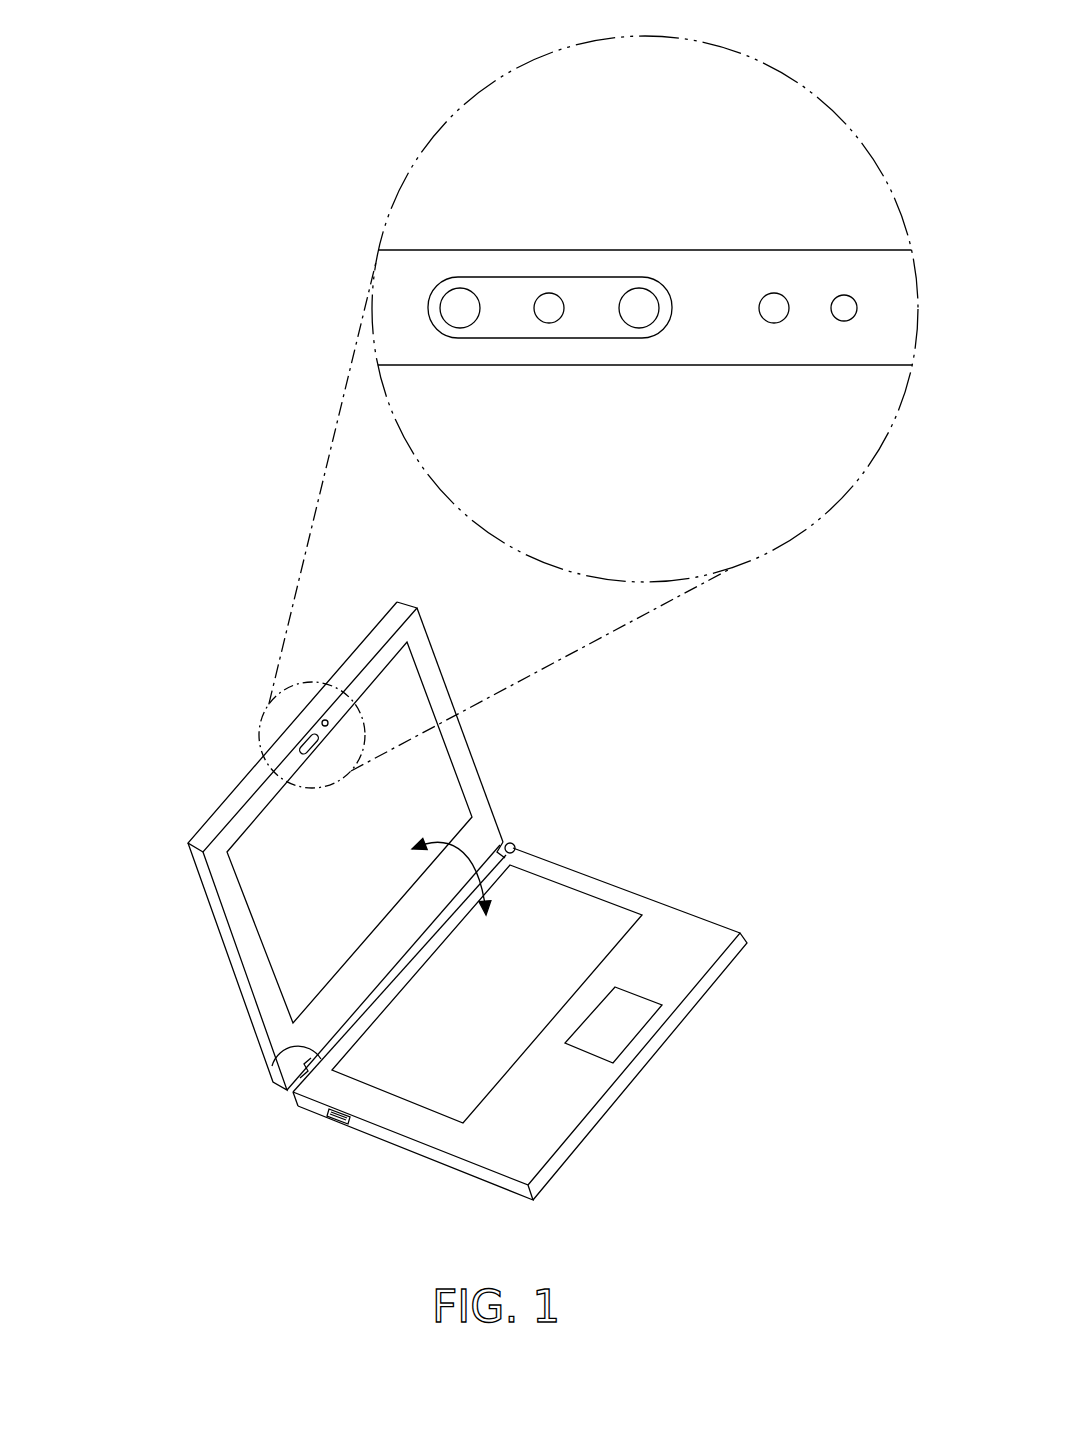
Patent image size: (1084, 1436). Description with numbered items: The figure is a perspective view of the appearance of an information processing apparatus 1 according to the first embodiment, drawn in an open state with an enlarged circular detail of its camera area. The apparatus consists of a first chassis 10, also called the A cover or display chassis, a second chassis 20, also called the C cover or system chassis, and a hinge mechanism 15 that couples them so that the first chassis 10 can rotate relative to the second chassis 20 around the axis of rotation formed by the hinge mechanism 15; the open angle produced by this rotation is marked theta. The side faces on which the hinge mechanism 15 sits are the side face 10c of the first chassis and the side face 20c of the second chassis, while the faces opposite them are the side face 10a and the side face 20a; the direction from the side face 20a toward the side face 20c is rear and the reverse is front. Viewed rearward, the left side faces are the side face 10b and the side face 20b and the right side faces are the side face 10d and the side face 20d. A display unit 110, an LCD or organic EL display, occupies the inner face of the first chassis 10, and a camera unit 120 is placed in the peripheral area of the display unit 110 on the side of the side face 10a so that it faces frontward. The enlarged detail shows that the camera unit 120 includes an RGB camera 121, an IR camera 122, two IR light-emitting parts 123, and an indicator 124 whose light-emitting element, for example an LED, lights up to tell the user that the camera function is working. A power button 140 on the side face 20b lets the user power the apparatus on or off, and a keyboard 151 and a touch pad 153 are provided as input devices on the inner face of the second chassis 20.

The information processing apparatus 1 is at (160, 594).
The first chassis 10 is at (170, 1014).
The side face 10a is at (243, 790).
The side face 10b is at (222, 928).
The side face 10c is at (511, 842).
The side face 10d is at (430, 634).
The hinge mechanism 15 is at (282, 1063).
The second chassis 20 is at (626, 1158).
The side face 20a is at (733, 962).
The side face 20b is at (455, 1163).
The side face 20c is at (297, 1100).
The side face 20d is at (710, 917).
The display unit 110 is at (443, 790).
The camera unit 120 is at (258, 737).
The RGB camera 121 is at (773, 324).
The IR camera 122 is at (550, 324).
The IR light-emitting part 123 is at (457, 329).
The indicator 124 is at (843, 322).
The power button 140 is at (337, 1115).
The keyboard 151 is at (587, 923).
The touch pad 153 is at (628, 1028).